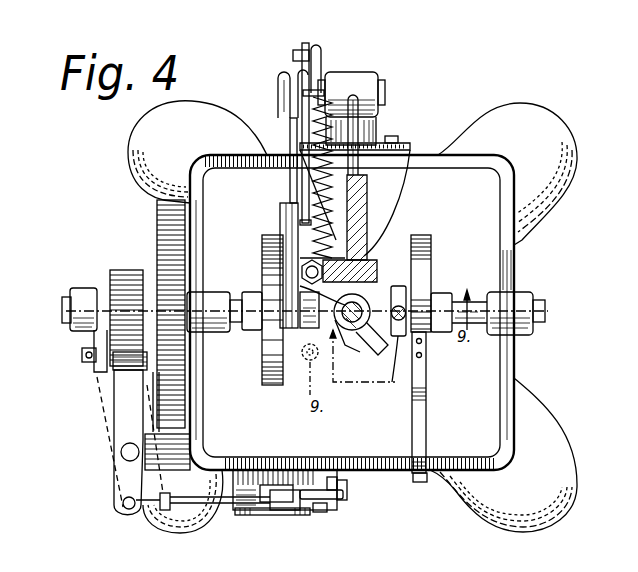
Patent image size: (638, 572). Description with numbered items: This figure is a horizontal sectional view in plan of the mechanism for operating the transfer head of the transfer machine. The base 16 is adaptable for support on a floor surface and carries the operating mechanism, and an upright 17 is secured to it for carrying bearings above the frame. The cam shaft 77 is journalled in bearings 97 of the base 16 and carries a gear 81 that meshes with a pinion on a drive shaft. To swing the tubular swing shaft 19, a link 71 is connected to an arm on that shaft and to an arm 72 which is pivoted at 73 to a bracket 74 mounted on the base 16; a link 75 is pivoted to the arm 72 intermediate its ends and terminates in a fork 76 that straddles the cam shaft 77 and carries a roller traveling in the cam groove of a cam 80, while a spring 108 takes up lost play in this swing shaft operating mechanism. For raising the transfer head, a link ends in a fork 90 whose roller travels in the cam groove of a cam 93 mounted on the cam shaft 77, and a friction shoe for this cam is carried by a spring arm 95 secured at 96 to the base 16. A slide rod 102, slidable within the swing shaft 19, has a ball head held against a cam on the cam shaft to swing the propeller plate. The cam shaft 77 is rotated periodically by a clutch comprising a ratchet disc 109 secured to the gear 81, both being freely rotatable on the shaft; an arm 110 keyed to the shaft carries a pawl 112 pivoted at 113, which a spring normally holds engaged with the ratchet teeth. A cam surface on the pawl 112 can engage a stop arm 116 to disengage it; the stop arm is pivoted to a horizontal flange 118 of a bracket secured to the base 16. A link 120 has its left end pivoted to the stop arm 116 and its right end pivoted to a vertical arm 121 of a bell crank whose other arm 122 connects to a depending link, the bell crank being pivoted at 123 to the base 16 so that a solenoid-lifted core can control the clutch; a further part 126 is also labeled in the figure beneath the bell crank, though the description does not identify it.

The base 16 is at (517, 362).
The upright 17 is at (390, 190).
The swing shaft 19 is at (372, 270).
The link 71 is at (325, 110).
The arm 72 is at (305, 43).
The pivot 73 is at (385, 92).
The bracket 74 is at (362, 130).
The link 75 is at (290, 134).
The fork 76 is at (286, 222).
The cam shaft 77 is at (62, 306).
The cam 80 is at (272, 385).
The gear 81 is at (157, 210).
The fork 90 is at (400, 345).
The cam 93 is at (432, 244).
The spring arm 95 is at (426, 416).
The securing point 96 is at (420, 483).
The bearings 97 is at (215, 292).
The slide rod 102 is at (353, 331).
The spring 108 is at (370, 212).
The ratchet disc 109 is at (135, 258).
The arm 110 is at (95, 337).
The pawl 112 is at (116, 366).
The pivot 113 is at (82, 356).
The stop arm 116 is at (116, 498).
The horizontal flange 118 is at (170, 471).
The link 120 is at (213, 516).
The vertical arm 121 is at (343, 489).
The arm 122 is at (292, 492).
The pivot 123 is at (325, 512).
The plate 126 is at (290, 515).